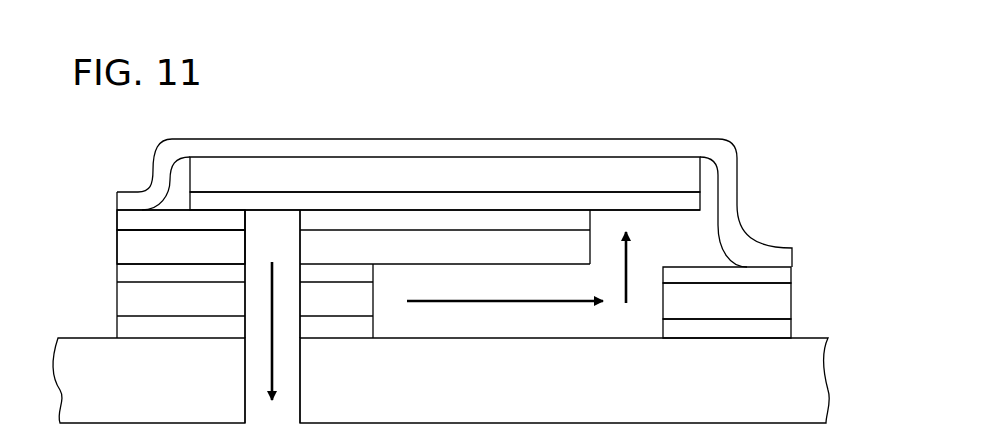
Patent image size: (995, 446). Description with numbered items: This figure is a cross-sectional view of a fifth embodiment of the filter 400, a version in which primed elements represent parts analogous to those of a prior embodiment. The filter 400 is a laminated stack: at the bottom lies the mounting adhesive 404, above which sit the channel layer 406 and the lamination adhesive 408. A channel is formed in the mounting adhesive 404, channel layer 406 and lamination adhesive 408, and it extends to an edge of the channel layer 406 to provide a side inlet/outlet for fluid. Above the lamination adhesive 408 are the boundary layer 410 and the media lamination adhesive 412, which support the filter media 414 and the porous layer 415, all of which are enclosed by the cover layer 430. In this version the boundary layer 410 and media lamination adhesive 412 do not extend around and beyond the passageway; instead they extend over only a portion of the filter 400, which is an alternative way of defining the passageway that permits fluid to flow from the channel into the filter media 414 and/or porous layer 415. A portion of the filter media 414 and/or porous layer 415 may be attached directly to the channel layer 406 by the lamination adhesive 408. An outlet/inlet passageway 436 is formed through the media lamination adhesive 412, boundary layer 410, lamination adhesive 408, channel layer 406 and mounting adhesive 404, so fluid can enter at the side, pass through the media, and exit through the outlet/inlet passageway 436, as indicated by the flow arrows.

The filter 400 is at (428, 130).
The cover layer 430 is at (667, 140).
The porous layer 415 is at (700, 180).
The filter media 414 is at (700, 203).
The media lamination adhesive 412 is at (117, 222).
The boundary layer 410 is at (117, 248).
The outlet/inlet passageway 436 is at (260, 307).
The lamination adhesive 408 is at (791, 276).
The channel layer 406 is at (791, 303).
The mounting adhesive 404 is at (791, 330).